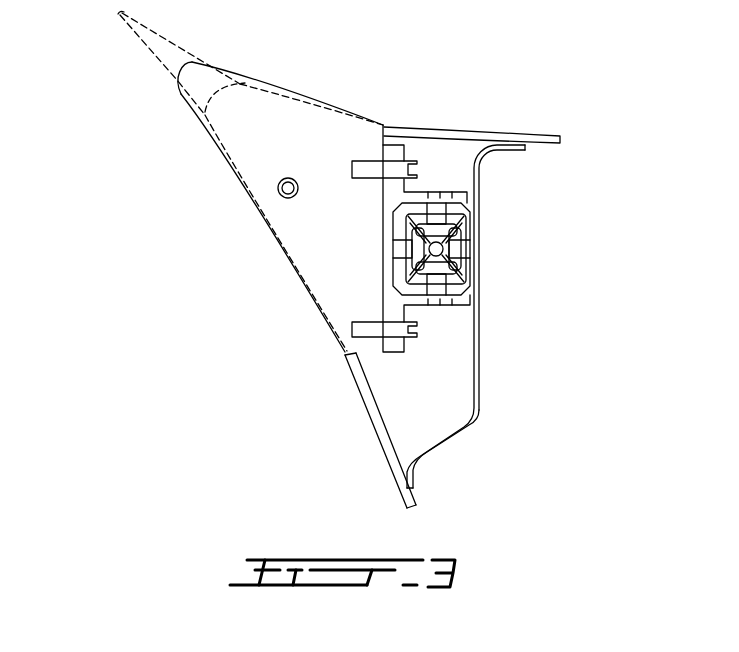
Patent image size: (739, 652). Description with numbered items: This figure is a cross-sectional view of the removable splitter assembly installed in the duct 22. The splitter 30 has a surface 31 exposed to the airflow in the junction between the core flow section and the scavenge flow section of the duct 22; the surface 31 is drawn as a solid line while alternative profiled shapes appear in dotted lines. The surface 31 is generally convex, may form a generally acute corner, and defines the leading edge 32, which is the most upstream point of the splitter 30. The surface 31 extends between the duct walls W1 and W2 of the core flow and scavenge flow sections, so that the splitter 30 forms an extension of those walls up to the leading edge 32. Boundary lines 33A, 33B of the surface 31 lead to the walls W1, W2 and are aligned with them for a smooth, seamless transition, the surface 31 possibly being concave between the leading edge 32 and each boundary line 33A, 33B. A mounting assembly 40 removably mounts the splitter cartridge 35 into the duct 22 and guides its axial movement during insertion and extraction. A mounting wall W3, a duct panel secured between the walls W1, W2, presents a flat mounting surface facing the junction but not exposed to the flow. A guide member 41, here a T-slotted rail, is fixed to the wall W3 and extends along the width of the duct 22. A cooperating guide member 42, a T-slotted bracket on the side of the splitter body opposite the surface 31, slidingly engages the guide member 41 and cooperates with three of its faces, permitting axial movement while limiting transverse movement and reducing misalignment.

The duct 22 is at (360, 446).
The splitter 30 is at (240, 222).
The surface 31 is at (218, 152).
The leading edge 32 is at (160, 84).
The boundary line 33A is at (345, 354).
The boundary line 33B is at (384, 125).
The splitter cartridge 35 is at (208, 295).
The mounting assembly 40 is at (512, 184).
The guide member 41 is at (456, 246).
The guide member 42 is at (440, 298).
The wall W1 is at (413, 500).
The wall W2 is at (552, 136).
The mounting wall W3 is at (483, 352).